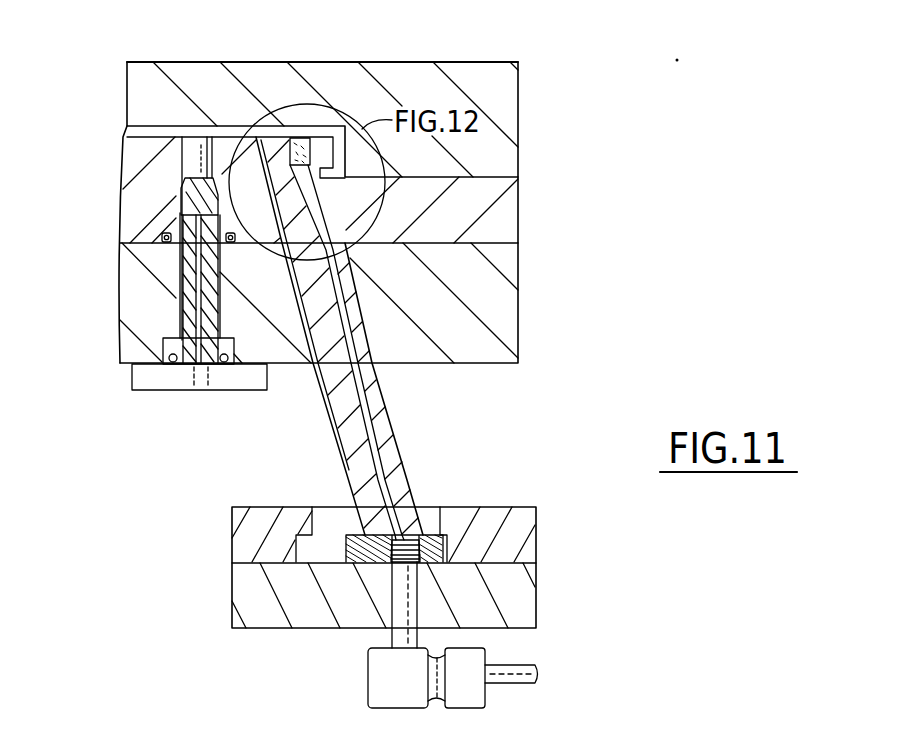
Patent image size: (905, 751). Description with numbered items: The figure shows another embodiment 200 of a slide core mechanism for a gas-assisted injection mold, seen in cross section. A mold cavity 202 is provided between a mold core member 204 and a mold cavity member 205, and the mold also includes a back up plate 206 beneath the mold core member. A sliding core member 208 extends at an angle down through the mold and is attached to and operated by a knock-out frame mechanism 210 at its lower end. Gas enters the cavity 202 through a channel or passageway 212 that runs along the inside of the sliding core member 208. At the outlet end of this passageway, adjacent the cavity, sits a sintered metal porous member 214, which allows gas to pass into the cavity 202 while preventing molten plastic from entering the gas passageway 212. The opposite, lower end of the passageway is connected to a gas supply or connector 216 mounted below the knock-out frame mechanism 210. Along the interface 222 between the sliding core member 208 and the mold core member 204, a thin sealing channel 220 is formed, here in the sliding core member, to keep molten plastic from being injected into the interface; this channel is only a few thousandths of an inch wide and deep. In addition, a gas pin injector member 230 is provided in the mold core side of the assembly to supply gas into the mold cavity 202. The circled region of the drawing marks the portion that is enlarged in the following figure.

The slide core mechanism embodiment 200 is at (201, 443).
The mold cavity 202 is at (147, 125).
The mold core member 204 is at (513, 212).
The mold cavity member 205 is at (515, 93).
The back up plate 206 is at (508, 297).
The sliding core member 208 is at (378, 402).
The knock-out frame mechanism 210 is at (513, 587).
The gas passageway 212 is at (377, 433).
The sintered metal porous member 214 is at (297, 140).
The gas supply or connector 216 is at (373, 662).
The sealing channel 220 is at (193, 62).
The interface 222 is at (295, 302).
The gas pin injector member 230 is at (194, 197).